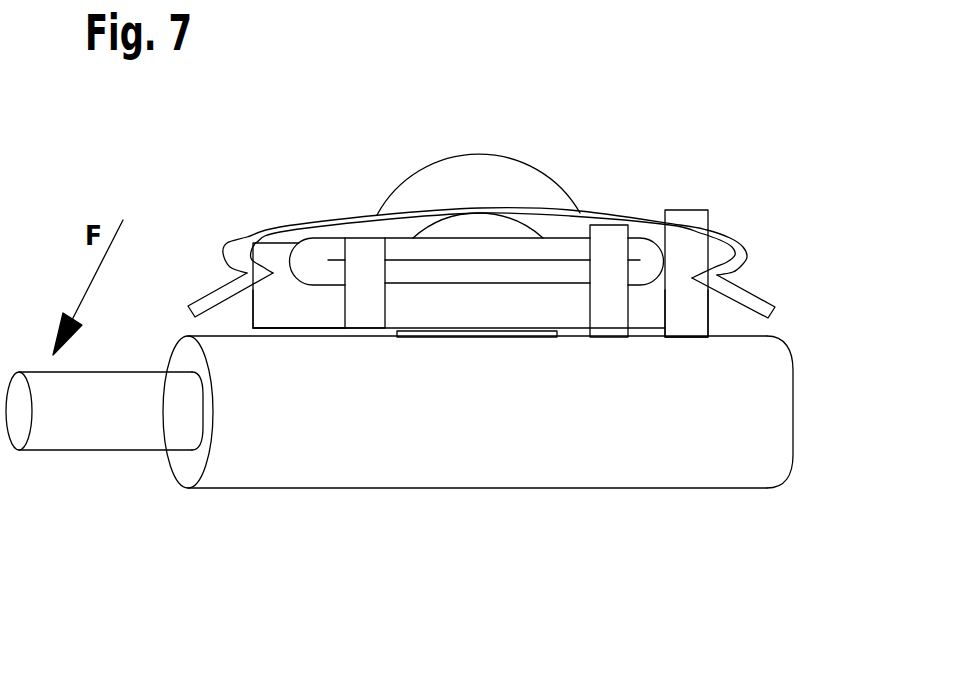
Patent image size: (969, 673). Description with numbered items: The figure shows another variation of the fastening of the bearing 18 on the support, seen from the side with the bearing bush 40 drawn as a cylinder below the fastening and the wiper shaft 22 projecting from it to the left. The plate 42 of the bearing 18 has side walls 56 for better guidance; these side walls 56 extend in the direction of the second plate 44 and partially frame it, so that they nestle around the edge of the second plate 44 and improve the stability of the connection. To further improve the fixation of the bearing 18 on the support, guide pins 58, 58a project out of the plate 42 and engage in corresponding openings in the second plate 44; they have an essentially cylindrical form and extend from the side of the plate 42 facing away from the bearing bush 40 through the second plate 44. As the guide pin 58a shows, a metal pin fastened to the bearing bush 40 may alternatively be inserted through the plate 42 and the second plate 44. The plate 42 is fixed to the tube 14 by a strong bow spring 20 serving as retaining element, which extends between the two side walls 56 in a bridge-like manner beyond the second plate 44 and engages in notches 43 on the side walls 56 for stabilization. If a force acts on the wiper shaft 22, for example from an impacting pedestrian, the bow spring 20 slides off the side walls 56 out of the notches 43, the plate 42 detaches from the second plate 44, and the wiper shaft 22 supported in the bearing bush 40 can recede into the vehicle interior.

The tube 14 is at (478, 178).
The bearing 18 is at (793, 237).
The bow spring 20 is at (733, 247).
The wiper shaft 22 is at (98, 425).
The bearing bush 40 is at (383, 455).
The plate 42 is at (677, 312).
The notches 43 is at (262, 282).
The second plate 44 is at (325, 248).
The side walls 56 is at (278, 258).
The guide pin 58 is at (372, 247).
The guide pin 58a is at (612, 243).